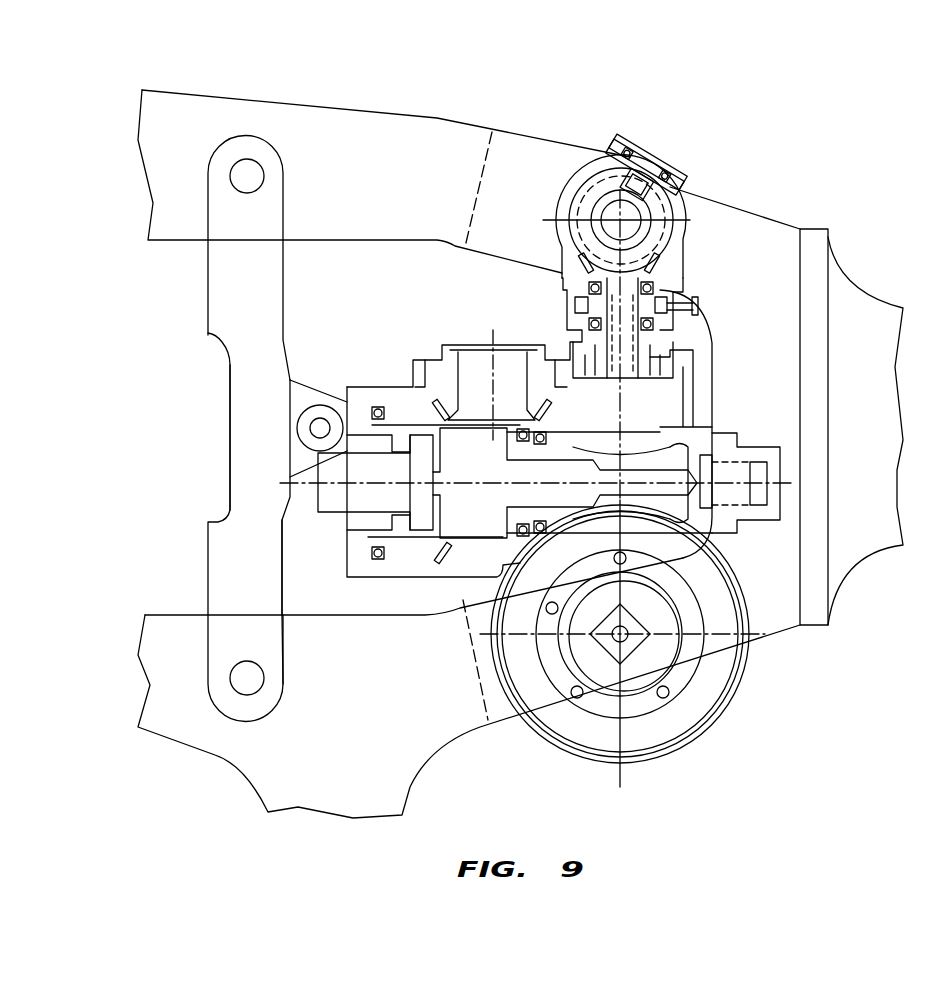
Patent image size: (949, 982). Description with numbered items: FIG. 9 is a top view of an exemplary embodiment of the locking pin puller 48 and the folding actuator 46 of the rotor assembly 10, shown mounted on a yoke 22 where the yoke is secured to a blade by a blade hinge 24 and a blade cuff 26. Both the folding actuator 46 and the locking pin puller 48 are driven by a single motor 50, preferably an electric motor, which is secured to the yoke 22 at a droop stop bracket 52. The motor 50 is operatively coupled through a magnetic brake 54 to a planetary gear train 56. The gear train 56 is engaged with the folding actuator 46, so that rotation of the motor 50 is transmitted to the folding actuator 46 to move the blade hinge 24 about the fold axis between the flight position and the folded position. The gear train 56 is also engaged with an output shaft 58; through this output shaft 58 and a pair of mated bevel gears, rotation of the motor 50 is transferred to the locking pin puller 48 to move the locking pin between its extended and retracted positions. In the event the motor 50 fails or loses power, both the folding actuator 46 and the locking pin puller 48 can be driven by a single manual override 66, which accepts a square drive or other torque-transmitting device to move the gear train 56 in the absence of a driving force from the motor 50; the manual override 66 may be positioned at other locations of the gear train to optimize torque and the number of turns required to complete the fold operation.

The actuator assembly 10 is at (673, 133).
The yoke 22 is at (362, 128).
The blade hinge 24 is at (770, 240).
The blade cuff 26 is at (853, 312).
The folding actuator 46 is at (658, 772).
The locking pin puller 48 is at (703, 181).
The motor 50 is at (335, 502).
The droop stop bracket 52 is at (230, 540).
The magnetic brake 54 is at (417, 517).
The planetary gear train 56 is at (468, 523).
The output shaft 58 is at (628, 337).
The manual override 66 is at (655, 157).